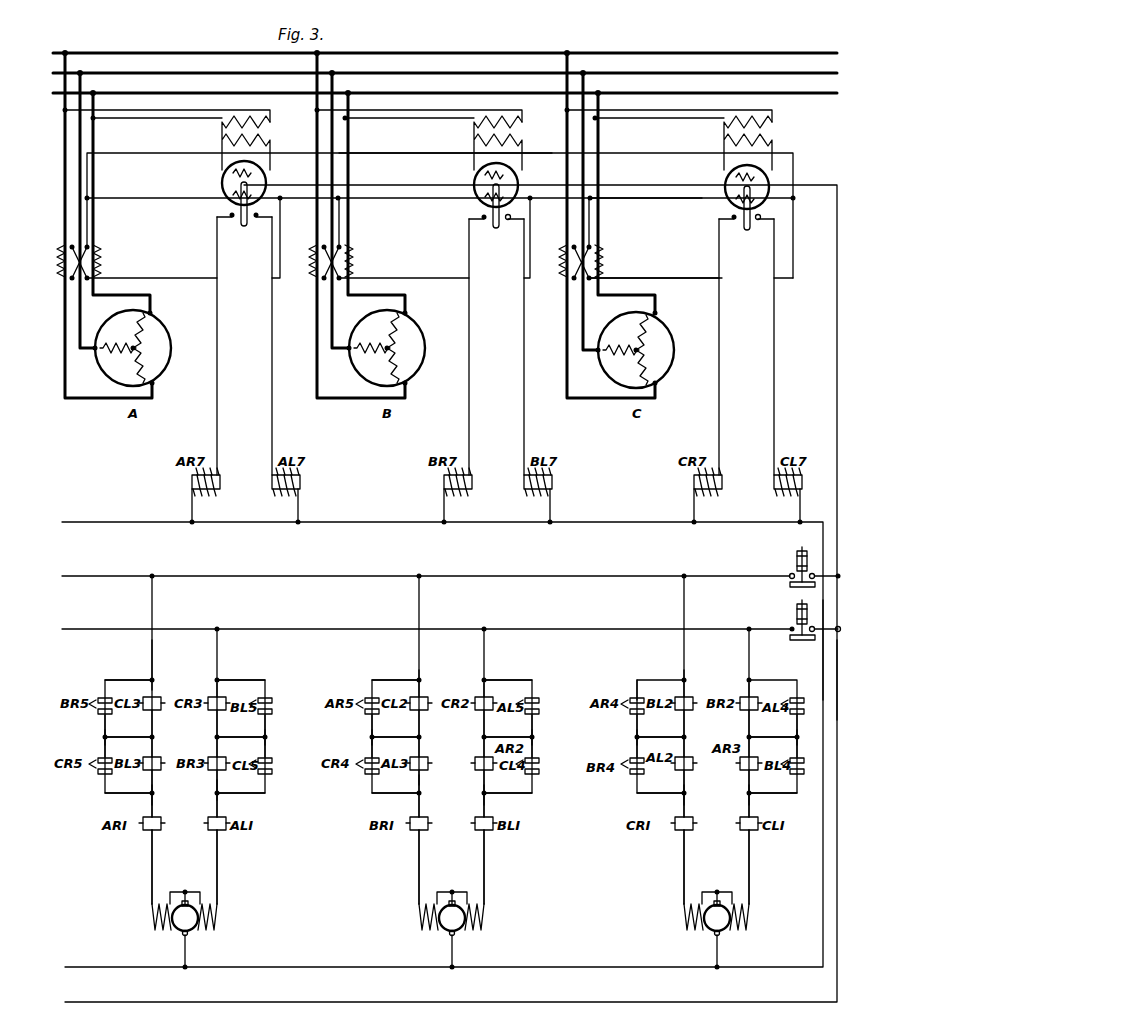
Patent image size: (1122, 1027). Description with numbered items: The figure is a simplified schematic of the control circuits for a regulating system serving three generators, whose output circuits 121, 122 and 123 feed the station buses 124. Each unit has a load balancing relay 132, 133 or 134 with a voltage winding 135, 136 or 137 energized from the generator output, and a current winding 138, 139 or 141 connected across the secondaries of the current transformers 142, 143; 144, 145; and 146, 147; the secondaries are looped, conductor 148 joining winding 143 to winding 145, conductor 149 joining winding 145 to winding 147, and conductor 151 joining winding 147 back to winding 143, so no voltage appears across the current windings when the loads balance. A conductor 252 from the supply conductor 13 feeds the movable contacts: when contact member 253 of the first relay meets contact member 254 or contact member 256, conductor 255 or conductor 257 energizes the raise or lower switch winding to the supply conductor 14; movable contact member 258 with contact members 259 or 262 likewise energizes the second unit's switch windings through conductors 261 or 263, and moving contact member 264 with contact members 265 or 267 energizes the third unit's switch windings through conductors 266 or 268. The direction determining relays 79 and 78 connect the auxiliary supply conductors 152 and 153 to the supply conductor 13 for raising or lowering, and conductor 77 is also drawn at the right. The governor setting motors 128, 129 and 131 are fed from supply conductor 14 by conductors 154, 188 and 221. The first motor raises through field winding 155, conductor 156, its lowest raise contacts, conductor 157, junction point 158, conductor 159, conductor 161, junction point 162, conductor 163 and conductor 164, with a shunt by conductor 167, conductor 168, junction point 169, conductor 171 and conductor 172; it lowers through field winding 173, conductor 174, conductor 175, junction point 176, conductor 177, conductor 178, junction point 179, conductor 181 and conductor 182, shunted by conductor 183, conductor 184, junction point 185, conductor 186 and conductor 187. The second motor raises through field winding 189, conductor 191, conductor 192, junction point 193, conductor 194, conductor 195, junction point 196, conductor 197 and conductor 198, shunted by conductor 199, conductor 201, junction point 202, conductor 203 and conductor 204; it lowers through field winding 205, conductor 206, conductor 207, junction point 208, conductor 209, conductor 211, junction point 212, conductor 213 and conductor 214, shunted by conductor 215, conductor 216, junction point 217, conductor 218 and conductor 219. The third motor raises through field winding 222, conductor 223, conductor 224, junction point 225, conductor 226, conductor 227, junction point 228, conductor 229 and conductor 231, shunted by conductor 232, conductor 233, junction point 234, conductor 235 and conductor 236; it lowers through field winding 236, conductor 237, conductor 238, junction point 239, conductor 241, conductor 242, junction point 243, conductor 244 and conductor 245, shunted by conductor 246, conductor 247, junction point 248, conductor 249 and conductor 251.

The supply conductor 13 is at (585, 1007).
The supply conductor 14 is at (108, 525).
The output circuit 121 is at (75, 128).
The output circuit 122 is at (419, 125).
The output circuit 123 is at (669, 125).
The station buses 124 is at (425, 93).
The load balancing relay 132 is at (217, 186).
The load balancing relay 133 is at (480, 185).
The load balancing relay 134 is at (731, 187).
The voltage winding 135 is at (250, 170).
The voltage winding 136 is at (514, 164).
The voltage winding 137 is at (727, 165).
The current winding 138 is at (262, 186).
The current winding 139 is at (520, 190).
The current winding 141 is at (724, 194).
The current transformer 142 is at (76, 246).
The current transformer 143 is at (94, 251).
The current transformer 144 is at (303, 254).
The current transformer 145 is at (360, 254).
The current transformer 146 is at (554, 254).
The current transformer 147 is at (611, 254).
The conductor 148 is at (144, 284).
The conductor 149 is at (404, 273).
The conductor 151 is at (530, 210).
The auxiliary supply conductor 152 is at (721, 580).
The auxiliary supply conductor 153 is at (721, 634).
The conductor 252 is at (645, 181).
The contact member 253 is at (236, 213).
The contact member 254 is at (232, 218).
The contact member 256 is at (256, 218).
The conductor 255 is at (218, 388).
The conductor 257 is at (271, 388).
The movable contact member 258 is at (474, 206).
The contact member 259 is at (485, 232).
The contact member 262 is at (522, 208).
The conductor 261 is at (486, 347).
The conductor 263 is at (539, 347).
The moving contact member 264 is at (725, 208).
The contact member 265 is at (735, 232).
The contact member 267 is at (773, 208).
The conductor 266 is at (737, 347).
The conductor 268 is at (791, 347).
The conductor 77 is at (823, 655).
The direction determining relay 78 is at (812, 598).
The direction determining relay 79 is at (810, 543).
The conductor 251 is at (780, 682).
The adjusting motor 128 is at (178, 948).
The adjusting motor 129 is at (442, 920).
The adjusting motor 131 is at (707, 920).
The conductor 154 is at (186, 945).
The field winding 155 is at (152, 918).
The conductor 156 is at (152, 868).
The conductor 157 is at (153, 802).
The junction point 158 is at (152, 793).
The conductor 159 is at (153, 778).
The conductor 161 is at (153, 745).
The junction point 162 is at (152, 737).
The conductor 163 is at (153, 720).
The conductor 164 is at (153, 653).
The conductor 167 is at (118, 793).
The conductor 168 is at (105, 745).
The junction point 169 is at (105, 735).
The conductor 171 is at (105, 723).
The conductor 172 is at (118, 682).
The field winding 173 is at (218, 918).
The conductor 174 is at (217, 868).
The conductor 175 is at (217, 805).
The junction point 176 is at (218, 791).
The conductor 177 is at (217, 778).
The conductor 178 is at (217, 745).
The junction point 179 is at (217, 735).
The conductor 181 is at (217, 723).
The conductor 182 is at (217, 689).
The conductor 183 is at (258, 793).
The conductor 184 is at (265, 745).
The junction point 185 is at (265, 737).
The conductor 186 is at (265, 728).
The conductor 187 is at (258, 690).
The conductor 188 is at (470, 951).
The field winding 189 is at (408, 917).
The conductor 191 is at (400, 867).
The conductor 192 is at (437, 805).
The junction point 193 is at (437, 781).
The conductor 194 is at (402, 778).
The conductor 195 is at (437, 746).
The junction point 196 is at (395, 727).
The conductor 197 is at (437, 723).
The conductor 198 is at (437, 683).
The conductor 199 is at (390, 802).
The conductor 201 is at (352, 746).
The junction point 202 is at (351, 734).
The conductor 203 is at (351, 724).
The conductor 204 is at (387, 672).
The field winding 205 is at (494, 917).
The conductor 206 is at (502, 867).
The conductor 207 is at (503, 805).
The junction point 208 is at (467, 794).
The conductor 209 is at (468, 781).
The conductor 211 is at (467, 747).
The junction point 212 is at (491, 734).
The conductor 213 is at (468, 723).
The conductor 214 is at (467, 687).
The conductor 215 is at (524, 802).
The conductor 216 is at (552, 746).
The junction point 217 is at (511, 732).
The conductor 218 is at (552, 725).
The conductor 219 is at (525, 674).
The conductor 221 is at (735, 951).
The field winding 222 is at (673, 917).
The conductor 223 is at (665, 867).
The conductor 224 is at (702, 805).
The junction point 225 is at (702, 794).
The conductor 226 is at (702, 781).
The conductor 227 is at (702, 746).
The junction point 228 is at (679, 732).
The conductor 229 is at (702, 723).
The conductor 231 is at (702, 683).
The conductor 232 is at (660, 788).
The conductor 233 is at (619, 747).
The junction point 234 is at (617, 736).
The conductor 235 is at (618, 725).
The conductor / field winding 236 is at (694, 804).
The conductor 237 is at (767, 867).
The conductor 238 is at (768, 805).
The junction point 239 is at (768, 792).
The conductor 241 is at (733, 781).
The conductor 242 is at (768, 747).
The junction point 243 is at (758, 736).
The conductor 244 is at (768, 723).
The conductor 245 is at (732, 687).
The conductor 246 is at (783, 803).
The conductor 247 is at (813, 747).
The junction point 248 is at (813, 736).
The conductor 249 is at (813, 725).